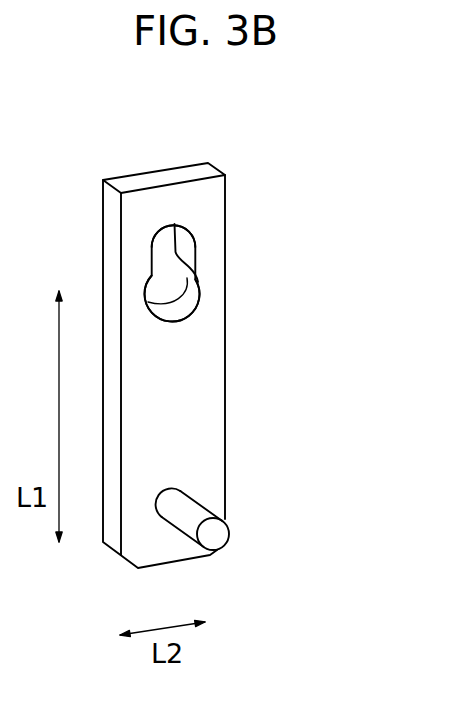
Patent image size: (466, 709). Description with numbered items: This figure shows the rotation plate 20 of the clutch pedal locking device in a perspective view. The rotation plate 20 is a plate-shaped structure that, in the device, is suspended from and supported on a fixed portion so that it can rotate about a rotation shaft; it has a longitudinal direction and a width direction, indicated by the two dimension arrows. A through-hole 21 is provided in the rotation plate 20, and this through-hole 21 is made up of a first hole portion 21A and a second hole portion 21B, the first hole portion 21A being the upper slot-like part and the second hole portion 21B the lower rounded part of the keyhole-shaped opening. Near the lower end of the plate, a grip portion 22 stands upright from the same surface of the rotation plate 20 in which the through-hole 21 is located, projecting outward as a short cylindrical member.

The rotation plate 20 is at (188, 415).
The through-hole 21 is at (150, 277).
The first hole portion 21A is at (170, 245).
The second hole portion 21B is at (172, 292).
The grip portion 22 is at (213, 535).